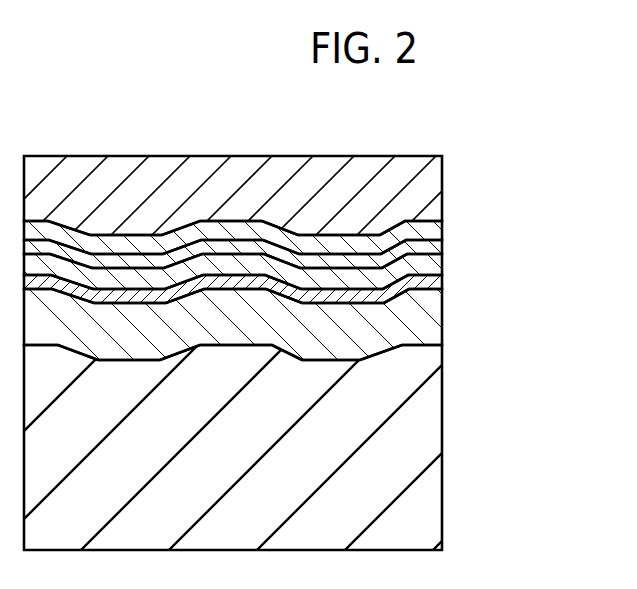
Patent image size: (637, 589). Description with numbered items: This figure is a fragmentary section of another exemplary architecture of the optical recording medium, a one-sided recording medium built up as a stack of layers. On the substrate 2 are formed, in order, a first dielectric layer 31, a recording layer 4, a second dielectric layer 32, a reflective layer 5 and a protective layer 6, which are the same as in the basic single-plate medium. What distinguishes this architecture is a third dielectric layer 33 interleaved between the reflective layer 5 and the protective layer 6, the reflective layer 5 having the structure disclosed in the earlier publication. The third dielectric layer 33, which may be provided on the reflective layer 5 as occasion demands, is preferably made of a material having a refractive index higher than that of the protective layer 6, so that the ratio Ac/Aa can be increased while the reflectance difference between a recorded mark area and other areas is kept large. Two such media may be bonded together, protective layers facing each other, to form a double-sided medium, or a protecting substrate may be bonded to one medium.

The substrate 2 is at (436, 422).
The first dielectric layer 31 is at (436, 325).
The recording layer 4 is at (436, 285).
The second dielectric layer 32 is at (435, 270).
The reflective layer 5 is at (436, 248).
The third dielectric layer 33 is at (435, 232).
The protective layer 6 is at (433, 193).